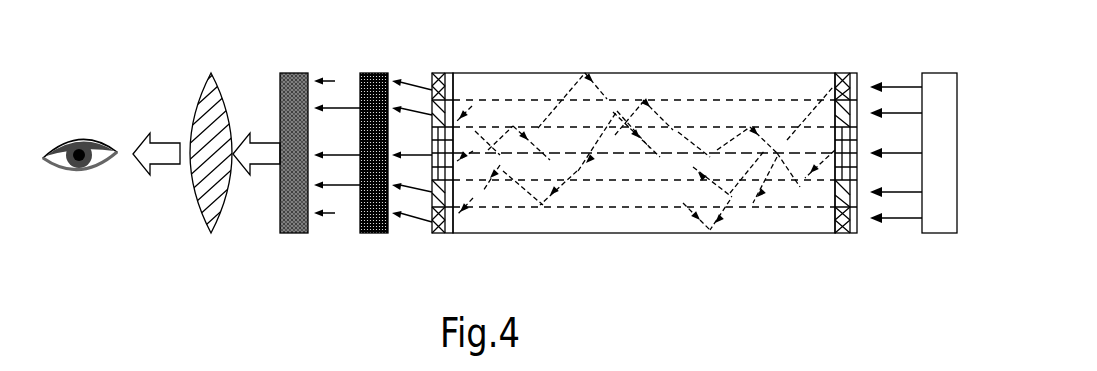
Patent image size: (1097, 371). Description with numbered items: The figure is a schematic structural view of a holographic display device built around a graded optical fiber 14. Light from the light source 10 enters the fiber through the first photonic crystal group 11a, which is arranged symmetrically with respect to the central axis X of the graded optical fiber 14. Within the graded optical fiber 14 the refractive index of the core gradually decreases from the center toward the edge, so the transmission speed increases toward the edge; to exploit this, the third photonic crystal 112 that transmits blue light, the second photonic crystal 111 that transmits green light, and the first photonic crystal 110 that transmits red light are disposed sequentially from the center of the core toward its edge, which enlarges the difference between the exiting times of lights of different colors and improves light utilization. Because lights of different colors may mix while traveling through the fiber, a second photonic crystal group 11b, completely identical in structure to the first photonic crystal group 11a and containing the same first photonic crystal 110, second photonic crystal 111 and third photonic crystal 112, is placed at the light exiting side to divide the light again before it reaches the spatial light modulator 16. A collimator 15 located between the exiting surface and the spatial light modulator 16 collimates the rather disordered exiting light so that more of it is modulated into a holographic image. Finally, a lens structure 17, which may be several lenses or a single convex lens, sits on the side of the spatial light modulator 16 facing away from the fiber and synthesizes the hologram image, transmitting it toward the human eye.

The light source 10 is at (944, 239).
The first photonic crystal group 11a is at (842, 68).
The second photonic crystal group 11b is at (444, 68).
The first photonic crystal 110 is at (445, 236).
The second photonic crystal 111 is at (432, 97).
The third photonic crystal 112 is at (433, 153).
The graded optical fiber 14 is at (649, 239).
The collimator 15 is at (371, 68).
The spatial light modulator 16 is at (294, 68).
The lens structure 17 is at (208, 68).
The central axis X is at (704, 148).